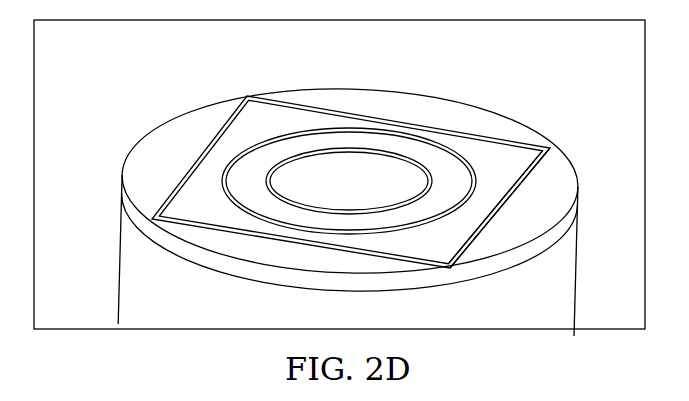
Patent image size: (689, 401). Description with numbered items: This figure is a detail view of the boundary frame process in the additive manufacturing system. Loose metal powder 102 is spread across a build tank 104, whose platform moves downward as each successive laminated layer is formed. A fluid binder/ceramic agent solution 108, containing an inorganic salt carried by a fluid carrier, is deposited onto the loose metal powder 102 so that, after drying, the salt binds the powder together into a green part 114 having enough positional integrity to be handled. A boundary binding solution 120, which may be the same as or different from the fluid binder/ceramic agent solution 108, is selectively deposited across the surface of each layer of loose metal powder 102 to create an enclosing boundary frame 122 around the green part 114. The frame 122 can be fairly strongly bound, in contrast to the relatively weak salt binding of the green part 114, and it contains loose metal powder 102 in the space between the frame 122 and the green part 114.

The loose metal powder 102 is at (180, 171).
The build tank 104 is at (137, 288).
The fluid binder/ceramic agent solution 108 is at (476, 177).
The green part 114 is at (448, 139).
The boundary binding solution 120 is at (340, 111).
The boundary frame 122 is at (513, 195).